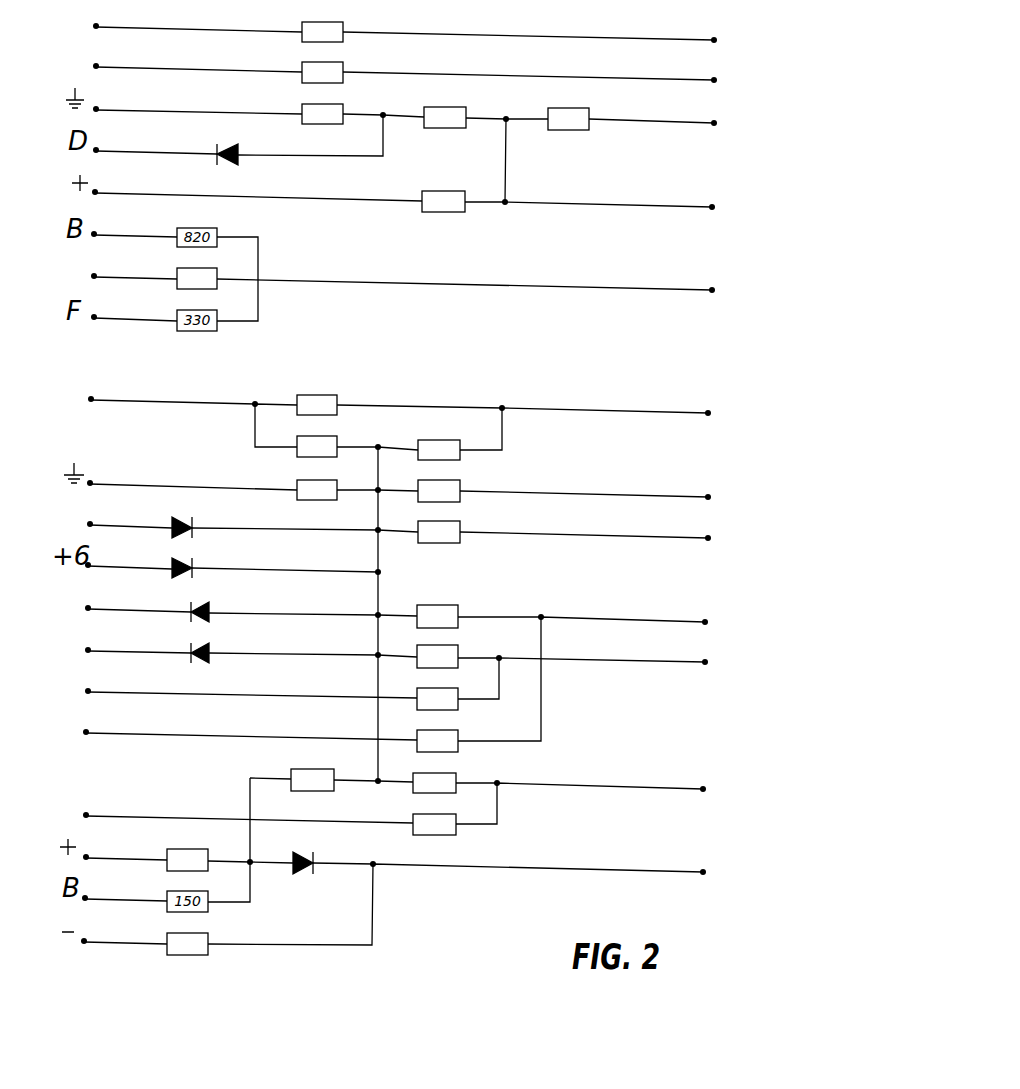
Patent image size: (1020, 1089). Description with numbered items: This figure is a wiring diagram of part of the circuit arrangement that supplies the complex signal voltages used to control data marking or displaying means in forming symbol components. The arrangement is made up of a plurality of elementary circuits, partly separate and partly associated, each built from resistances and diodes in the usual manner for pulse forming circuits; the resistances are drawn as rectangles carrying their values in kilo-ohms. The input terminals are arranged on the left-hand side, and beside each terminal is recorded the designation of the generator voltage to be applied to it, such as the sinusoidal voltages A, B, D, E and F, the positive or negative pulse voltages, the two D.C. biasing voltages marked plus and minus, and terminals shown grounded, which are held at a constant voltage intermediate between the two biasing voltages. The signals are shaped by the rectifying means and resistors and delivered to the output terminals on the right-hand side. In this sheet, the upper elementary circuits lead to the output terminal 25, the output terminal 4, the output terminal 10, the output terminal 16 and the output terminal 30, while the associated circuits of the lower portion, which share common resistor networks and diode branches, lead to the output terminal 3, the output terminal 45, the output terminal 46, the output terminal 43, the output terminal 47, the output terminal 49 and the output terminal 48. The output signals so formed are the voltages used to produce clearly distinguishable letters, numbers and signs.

The output terminal 25 is at (410, 27).
The output terminal 4 is at (403, 66).
The output terminal 10 is at (408, 110).
The output terminal 16 is at (411, 168).
The output terminal 30 is at (406, 279).
The output terminal 3 is at (399, 417).
The output terminal 45 is at (405, 485).
The output terminal 46 is at (399, 525).
The output terminal 43 is at (397, 668).
The output terminal 47 is at (397, 668).
The output terminal 49 is at (400, 801).
The output terminal 48 is at (400, 897).